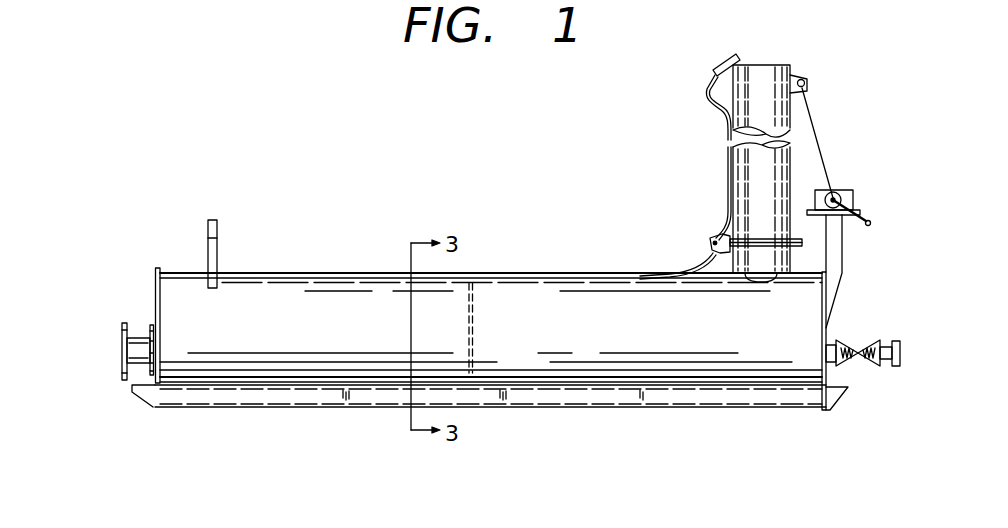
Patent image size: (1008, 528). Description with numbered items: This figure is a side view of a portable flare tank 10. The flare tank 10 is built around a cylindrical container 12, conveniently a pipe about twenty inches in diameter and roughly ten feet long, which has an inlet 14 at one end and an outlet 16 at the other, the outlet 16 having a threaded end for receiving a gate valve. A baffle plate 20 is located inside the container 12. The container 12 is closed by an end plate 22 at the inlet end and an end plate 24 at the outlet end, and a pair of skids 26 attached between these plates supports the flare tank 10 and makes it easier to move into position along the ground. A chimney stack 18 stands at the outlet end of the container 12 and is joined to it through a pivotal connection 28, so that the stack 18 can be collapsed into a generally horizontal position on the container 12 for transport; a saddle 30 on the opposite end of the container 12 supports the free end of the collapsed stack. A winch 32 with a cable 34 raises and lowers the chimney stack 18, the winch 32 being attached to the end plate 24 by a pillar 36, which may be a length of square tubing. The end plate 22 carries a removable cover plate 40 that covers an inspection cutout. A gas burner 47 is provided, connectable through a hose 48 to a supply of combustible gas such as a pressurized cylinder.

The flare tank 10 is at (418, 181).
The cylindrical container 12 is at (253, 272).
The inlet 14 is at (138, 366).
The outlet 16 is at (832, 363).
The chimney stack 18 is at (740, 172).
The baffle plate 20 is at (474, 290).
The end plate 22 is at (157, 270).
The end plate 24 is at (826, 296).
The skids 26 is at (324, 398).
The pivotal connection 28 is at (711, 240).
The saddle 30 is at (207, 225).
The winch 32 is at (853, 195).
The cable 34 is at (817, 141).
The pillar 36 is at (843, 249).
The removable cover plate 40 is at (145, 320).
The gas burner 47 is at (735, 57).
The hose 48 is at (706, 91).